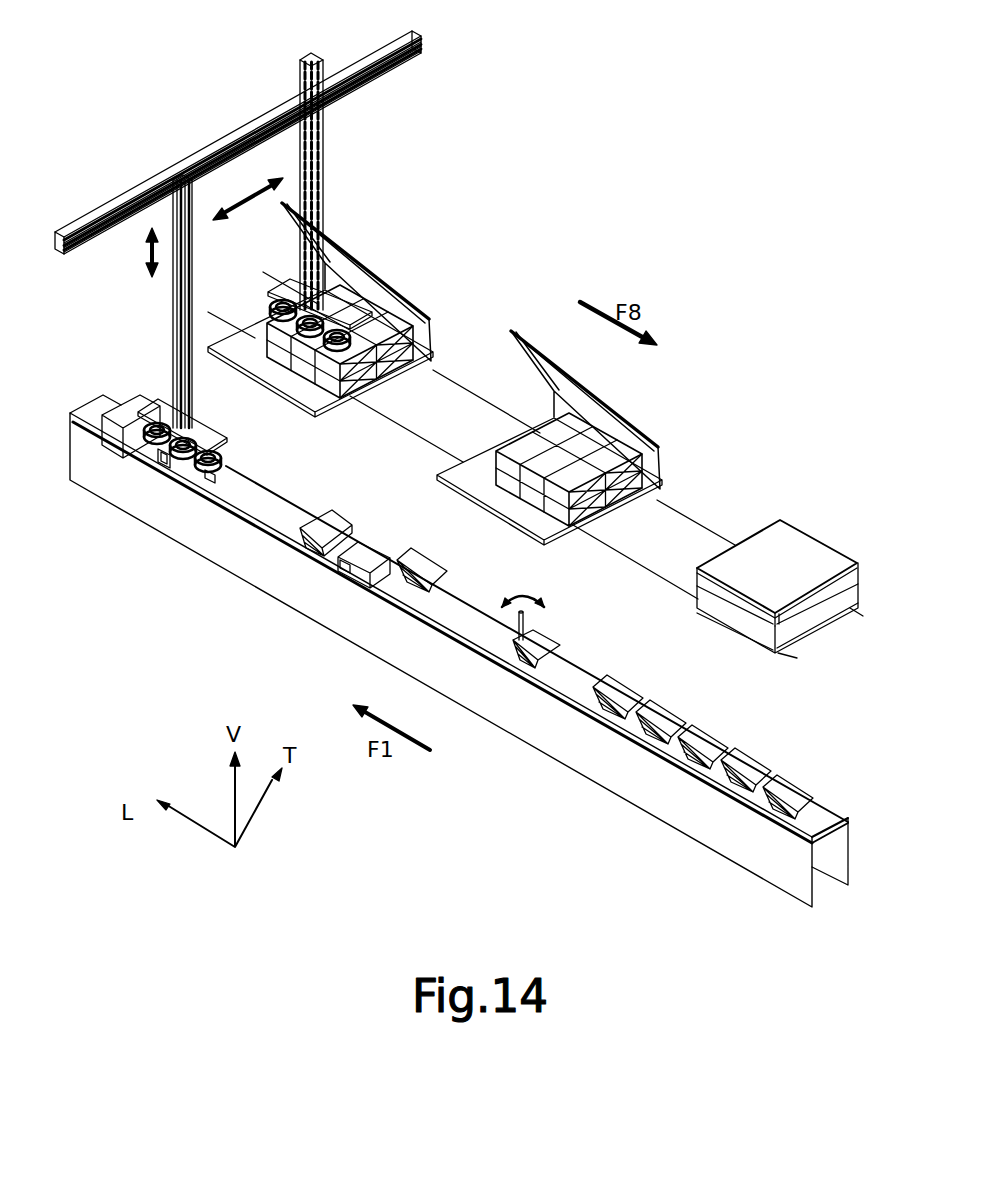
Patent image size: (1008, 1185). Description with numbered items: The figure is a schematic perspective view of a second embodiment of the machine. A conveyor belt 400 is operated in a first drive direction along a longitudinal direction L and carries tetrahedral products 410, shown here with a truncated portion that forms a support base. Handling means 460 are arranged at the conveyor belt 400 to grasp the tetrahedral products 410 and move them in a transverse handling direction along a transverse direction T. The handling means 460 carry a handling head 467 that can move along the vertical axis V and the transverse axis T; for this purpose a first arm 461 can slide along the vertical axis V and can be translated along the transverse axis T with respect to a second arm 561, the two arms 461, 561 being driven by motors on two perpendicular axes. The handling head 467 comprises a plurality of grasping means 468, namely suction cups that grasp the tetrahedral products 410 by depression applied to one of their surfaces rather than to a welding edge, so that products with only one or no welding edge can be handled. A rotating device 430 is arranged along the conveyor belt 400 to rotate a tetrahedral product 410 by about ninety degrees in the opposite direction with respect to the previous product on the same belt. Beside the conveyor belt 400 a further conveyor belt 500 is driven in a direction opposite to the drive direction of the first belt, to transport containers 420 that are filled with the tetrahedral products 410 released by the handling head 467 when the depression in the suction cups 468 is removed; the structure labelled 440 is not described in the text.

The conveyor belt 400 is at (455, 651).
The tetrahedral products 410 is at (388, 315).
The containers 420 is at (347, 252).
The rotating device 430 is at (537, 636).
The conveyor 440 is at (110, 442).
The handling means 460 is at (238, 229).
The first arm 461 is at (175, 322).
The handling head 467 is at (293, 297).
The grasping means 468 is at (278, 305).
The further conveyor belt 500 is at (437, 388).
The second arm 561 is at (136, 190).